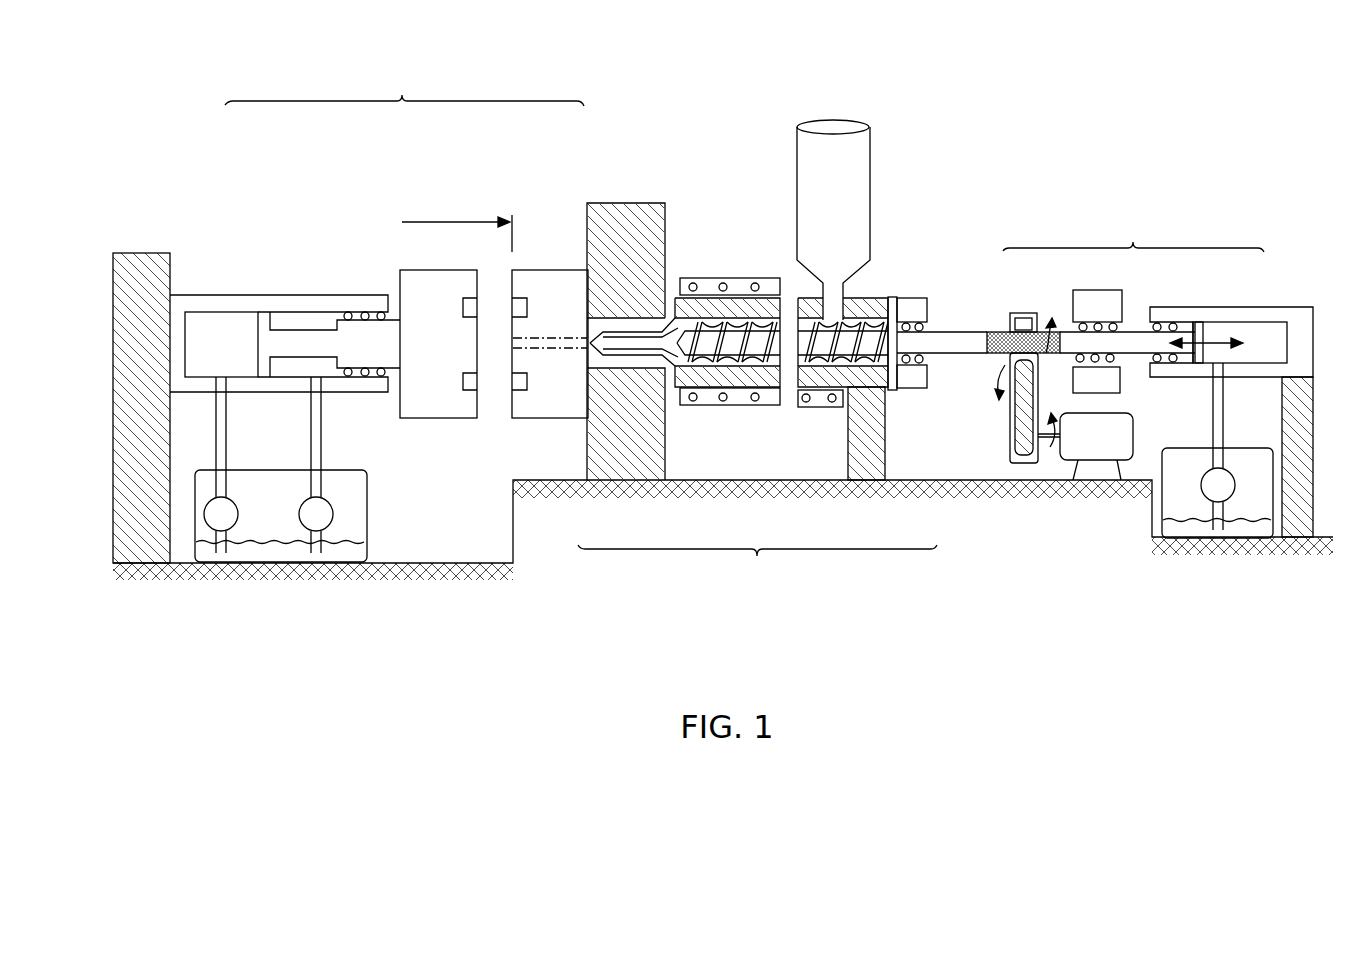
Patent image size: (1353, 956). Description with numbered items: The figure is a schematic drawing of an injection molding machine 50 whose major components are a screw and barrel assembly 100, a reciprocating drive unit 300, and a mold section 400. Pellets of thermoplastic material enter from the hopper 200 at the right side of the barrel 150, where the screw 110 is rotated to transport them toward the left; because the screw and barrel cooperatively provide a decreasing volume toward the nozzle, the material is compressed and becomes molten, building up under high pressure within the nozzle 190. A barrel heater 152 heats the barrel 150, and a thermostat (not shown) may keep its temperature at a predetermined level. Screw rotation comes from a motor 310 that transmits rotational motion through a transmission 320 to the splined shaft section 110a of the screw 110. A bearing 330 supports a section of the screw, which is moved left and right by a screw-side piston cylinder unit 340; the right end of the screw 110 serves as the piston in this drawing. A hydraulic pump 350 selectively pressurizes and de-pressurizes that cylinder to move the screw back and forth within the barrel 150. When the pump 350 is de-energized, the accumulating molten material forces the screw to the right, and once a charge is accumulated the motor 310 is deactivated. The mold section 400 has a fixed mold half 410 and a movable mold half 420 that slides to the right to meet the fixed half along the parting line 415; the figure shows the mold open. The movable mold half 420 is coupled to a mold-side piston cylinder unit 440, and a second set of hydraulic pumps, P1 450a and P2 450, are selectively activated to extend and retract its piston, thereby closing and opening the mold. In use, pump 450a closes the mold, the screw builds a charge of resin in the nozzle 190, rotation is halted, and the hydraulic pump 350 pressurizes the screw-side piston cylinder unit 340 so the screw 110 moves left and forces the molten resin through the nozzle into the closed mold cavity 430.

The injection molding machine 50 is at (1017, 114).
The screw and barrel assembly 100 is at (757, 557).
The screw 110 is at (951, 325).
The splined shaft section 110a is at (980, 217).
The barrel 150 is at (742, 302).
The barrel heater 152 is at (627, 322).
The nozzle 190 is at (693, 277).
The hopper 200 is at (814, 186).
The reciprocating drive unit 300 is at (1133, 242).
The motor 310 is at (1114, 448).
The transmission 320 is at (1028, 481).
The bearing 330 is at (1114, 318).
The screw-side piston cylinder unit 340 is at (1207, 307).
The hydraulic pump 350 is at (1200, 485).
The mold section 400 is at (402, 95).
The fixed mold half 410 is at (560, 268).
The parting line 415 is at (509, 218).
The movable mold half 420 is at (403, 268).
The mold cavity 430 is at (505, 414).
The mold-side piston cylinder unit 440 is at (297, 293).
The hydraulic pump P2 450 is at (342, 506).
The hydraulic pump P1 450a is at (243, 506).